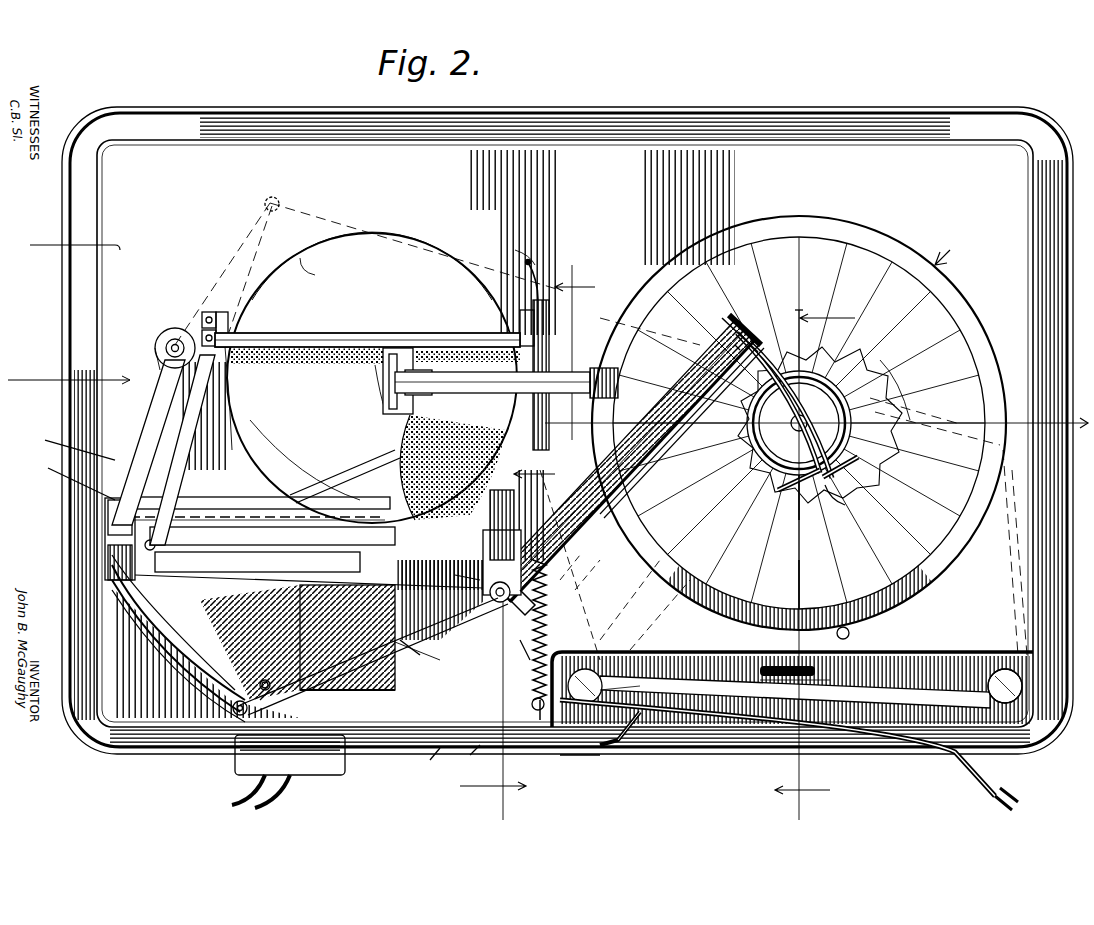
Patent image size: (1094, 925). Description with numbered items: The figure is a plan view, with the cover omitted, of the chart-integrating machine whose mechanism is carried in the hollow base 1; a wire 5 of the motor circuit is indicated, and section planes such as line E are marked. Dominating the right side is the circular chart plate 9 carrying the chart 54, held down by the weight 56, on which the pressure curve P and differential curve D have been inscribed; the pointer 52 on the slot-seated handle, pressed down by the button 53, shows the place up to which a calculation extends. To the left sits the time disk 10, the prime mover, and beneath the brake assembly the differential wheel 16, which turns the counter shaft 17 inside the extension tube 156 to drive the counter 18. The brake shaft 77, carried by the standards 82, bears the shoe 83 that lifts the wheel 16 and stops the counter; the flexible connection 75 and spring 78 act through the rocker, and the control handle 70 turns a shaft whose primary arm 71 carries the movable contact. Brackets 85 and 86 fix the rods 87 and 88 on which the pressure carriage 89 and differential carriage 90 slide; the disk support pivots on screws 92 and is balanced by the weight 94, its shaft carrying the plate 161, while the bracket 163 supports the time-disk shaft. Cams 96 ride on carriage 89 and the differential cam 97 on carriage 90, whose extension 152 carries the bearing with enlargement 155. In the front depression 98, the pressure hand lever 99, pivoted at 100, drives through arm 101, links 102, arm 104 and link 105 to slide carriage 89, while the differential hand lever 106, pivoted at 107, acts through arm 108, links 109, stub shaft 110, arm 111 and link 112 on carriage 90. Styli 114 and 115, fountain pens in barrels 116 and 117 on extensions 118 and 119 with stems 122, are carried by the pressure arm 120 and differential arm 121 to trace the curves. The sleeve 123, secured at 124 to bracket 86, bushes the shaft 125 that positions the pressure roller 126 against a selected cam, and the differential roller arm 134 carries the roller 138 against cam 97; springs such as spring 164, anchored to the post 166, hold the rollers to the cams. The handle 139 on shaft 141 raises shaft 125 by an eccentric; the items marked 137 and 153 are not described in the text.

The hollow base 1 is at (75, 245).
The wire 5 is at (69, 389).
The circular chart plate 9 is at (706, 528).
The time disk 10 is at (815, 564).
The differential wheel 16 is at (370, 396).
The counter shaft 17 is at (575, 346).
The counter 18 is at (618, 375).
The pointer 52 is at (838, 612).
The button 53 is at (845, 627).
The chart 54 is at (965, 312).
The weight 56 is at (760, 452).
The control handle 70 is at (785, 676).
The primary arm 71 is at (395, 252).
The flexible connection 75 is at (295, 254).
The brake shaft 77 is at (245, 330).
The spring 78 is at (526, 247).
The standards 82 is at (210, 310).
The shoe 83 is at (455, 334).
The bracket 85 is at (55, 540).
The bracket 86 is at (509, 572).
The rod 87 is at (492, 490).
The rod 88 is at (439, 575).
The pressure carriage 89 is at (108, 560).
The differential carriage 90 is at (385, 520).
The screws 92 is at (108, 512).
The weight 94 is at (349, 694).
The cams 96 is at (165, 645).
The differential cam 97 is at (175, 690).
The depression 98 is at (652, 650).
The pressure hand lever 99 is at (600, 748).
The pivot 100 is at (1062, 730).
The arm 101 is at (948, 526).
The link connections 102 is at (238, 240).
The arm 104 is at (66, 444).
The link connection 105 is at (66, 479).
The differential hand lever 106 is at (885, 752).
The pivot 107 is at (560, 755).
The arm 108 is at (645, 605).
The link connections 109 is at (548, 505).
The stub shaft 110 is at (165, 345).
The arm 111 is at (165, 405).
The link connection 112 is at (245, 497).
The stylus 114 is at (802, 507).
The stylus 115 is at (847, 503).
The steel barrel 116 is at (800, 488).
The steel barrel 117 is at (860, 470).
The extension 118 is at (770, 428).
The extension 119 is at (790, 300).
The pressure arm 120 is at (648, 415).
The differential arm 121 is at (660, 452).
The stems 122 is at (735, 332).
The sleeve 123 is at (501, 654).
The securing point 124 is at (470, 590).
The shaft 125 is at (463, 570).
The pressure roller 126 is at (233, 709).
The differential roller arm 134 is at (430, 642).
The terminal box 137 is at (288, 771).
The roller 138 is at (266, 680).
The handle 139 is at (425, 766).
The shaft 141 is at (480, 762).
The extension 152 is at (378, 485).
The disc 153 is at (358, 385).
The enlargement 155 is at (392, 346).
The extension tube 156 is at (366, 459).
The plate 161 is at (580, 572).
The bracket 163 is at (548, 613).
The spring 164 is at (530, 690).
The post 166 is at (530, 704).
The differential curve D is at (820, 425).
The pressure curve P is at (882, 348).
The axis line E is at (818, 431).